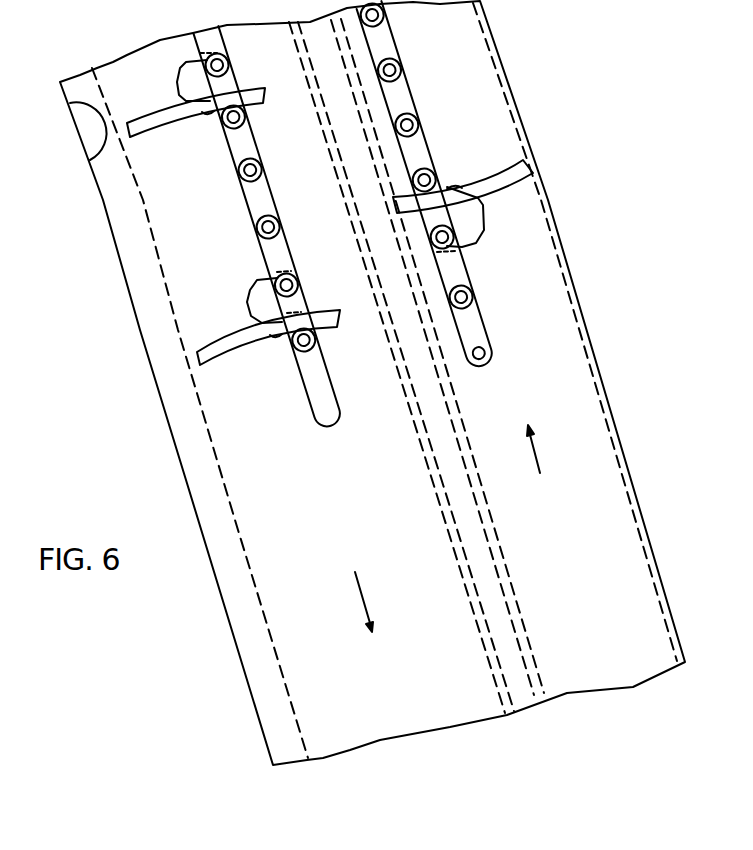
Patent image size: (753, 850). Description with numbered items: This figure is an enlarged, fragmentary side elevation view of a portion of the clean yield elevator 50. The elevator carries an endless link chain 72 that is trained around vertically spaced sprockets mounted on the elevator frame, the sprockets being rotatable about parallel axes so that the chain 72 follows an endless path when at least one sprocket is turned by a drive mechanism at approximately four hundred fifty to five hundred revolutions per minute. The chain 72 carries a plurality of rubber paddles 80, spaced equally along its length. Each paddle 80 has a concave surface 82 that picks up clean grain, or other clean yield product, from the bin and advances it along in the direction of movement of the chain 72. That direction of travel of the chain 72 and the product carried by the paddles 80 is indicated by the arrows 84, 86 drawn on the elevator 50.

The clean yield elevator 50 is at (587, 313).
The endless link chain 72 is at (417, 130).
The rubber paddle 80 is at (153, 112).
The concave surface 82 is at (498, 172).
The arrow 84 is at (537, 458).
The arrow 86 is at (361, 590).